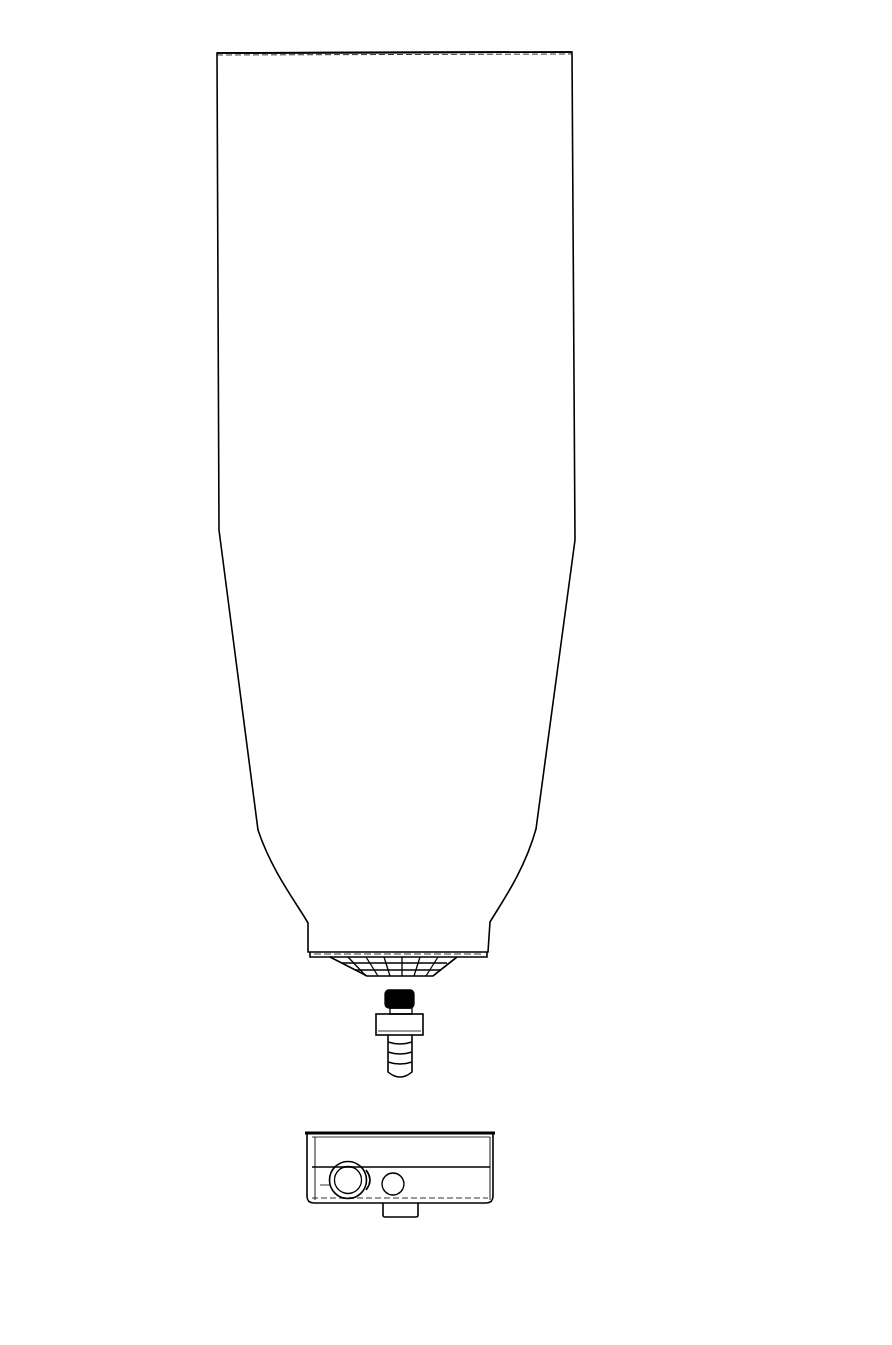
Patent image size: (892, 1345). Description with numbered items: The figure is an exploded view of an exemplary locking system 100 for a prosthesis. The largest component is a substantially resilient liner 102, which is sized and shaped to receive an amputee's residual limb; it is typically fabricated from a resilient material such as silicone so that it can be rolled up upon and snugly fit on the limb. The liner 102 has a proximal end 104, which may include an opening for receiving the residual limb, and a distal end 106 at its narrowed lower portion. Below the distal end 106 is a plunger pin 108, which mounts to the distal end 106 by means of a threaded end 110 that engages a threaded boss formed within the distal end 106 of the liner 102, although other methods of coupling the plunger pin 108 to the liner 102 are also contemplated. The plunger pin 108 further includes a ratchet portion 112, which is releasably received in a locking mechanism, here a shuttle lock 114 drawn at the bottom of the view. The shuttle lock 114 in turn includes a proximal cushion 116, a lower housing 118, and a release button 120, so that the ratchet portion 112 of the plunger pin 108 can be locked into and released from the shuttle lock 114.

The locking system 100 is at (632, 246).
The substantially resilient liner 102 is at (258, 523).
The proximal end 104 is at (285, 42).
The distal end 106 is at (348, 978).
The plunger pin 108 is at (350, 1031).
The threaded end 110 is at (414, 1002).
The ratchet portion 112 is at (412, 1063).
The shuttle lock 114 is at (280, 1150).
The proximal cushion 116 is at (483, 1150).
The lower housing 118 is at (483, 1185).
The release button 120 is at (345, 1180).